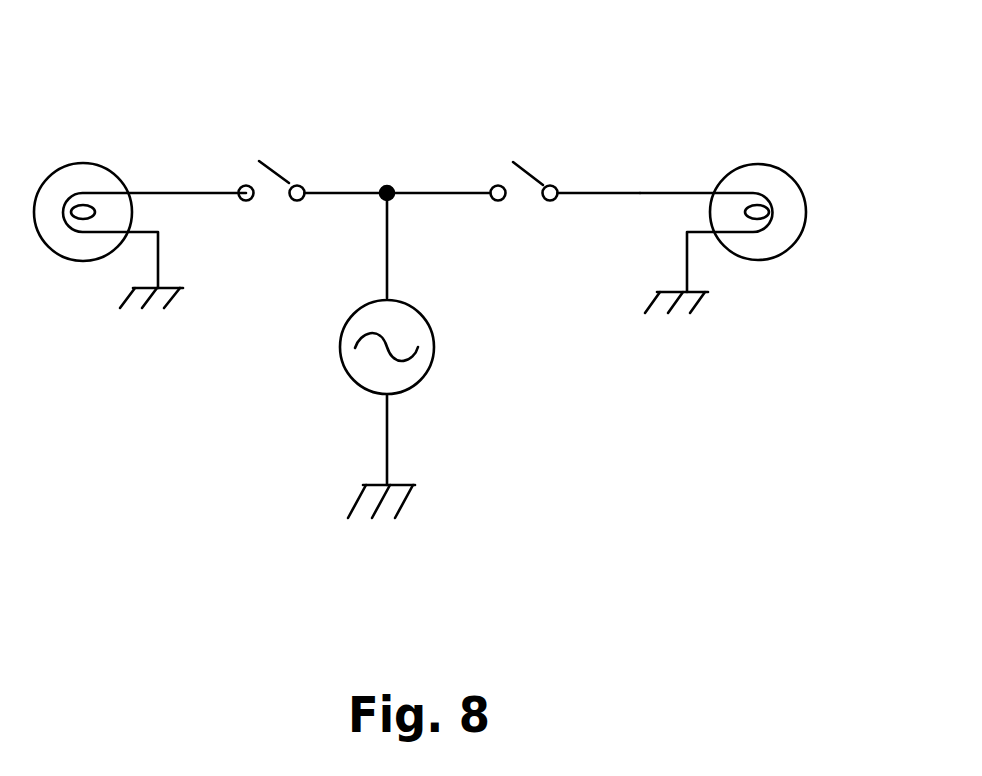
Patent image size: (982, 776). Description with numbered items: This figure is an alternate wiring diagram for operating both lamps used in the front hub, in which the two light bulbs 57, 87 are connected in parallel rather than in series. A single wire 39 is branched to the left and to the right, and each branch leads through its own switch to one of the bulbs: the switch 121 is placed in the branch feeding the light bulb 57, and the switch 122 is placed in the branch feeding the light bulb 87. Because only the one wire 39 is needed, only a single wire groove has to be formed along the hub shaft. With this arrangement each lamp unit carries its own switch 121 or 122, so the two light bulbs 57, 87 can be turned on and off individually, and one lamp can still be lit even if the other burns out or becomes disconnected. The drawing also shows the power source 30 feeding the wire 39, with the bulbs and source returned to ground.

The light bulb 57 is at (88, 165).
The light bulb 87 is at (772, 165).
The wire 39 is at (403, 195).
The switch 121 is at (273, 203).
The switch 122 is at (527, 200).
The AC power source 30 is at (435, 355).